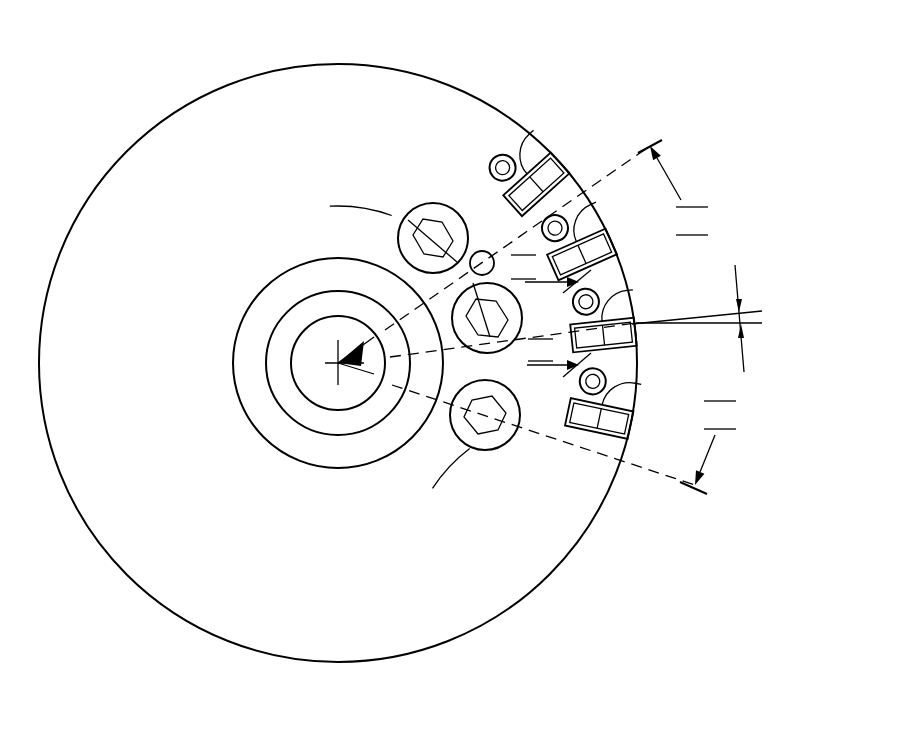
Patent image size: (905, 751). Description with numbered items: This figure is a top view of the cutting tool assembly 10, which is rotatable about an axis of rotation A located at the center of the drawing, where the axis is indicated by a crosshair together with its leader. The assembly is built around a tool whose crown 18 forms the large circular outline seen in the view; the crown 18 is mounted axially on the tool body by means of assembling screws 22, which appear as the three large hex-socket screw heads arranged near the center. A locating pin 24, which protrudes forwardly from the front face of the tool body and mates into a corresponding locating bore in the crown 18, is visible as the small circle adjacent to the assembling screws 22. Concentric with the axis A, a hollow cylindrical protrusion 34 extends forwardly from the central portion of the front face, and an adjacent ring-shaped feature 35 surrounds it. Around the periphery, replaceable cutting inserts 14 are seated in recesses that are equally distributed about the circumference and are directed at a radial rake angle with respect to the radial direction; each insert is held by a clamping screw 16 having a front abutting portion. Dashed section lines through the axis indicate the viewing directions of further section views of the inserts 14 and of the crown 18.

The cutting tool assembly 10 is at (656, 44).
The replaceable cutting inserts 14 is at (572, 150).
The clamping screws 16 is at (506, 152).
The crown 18 is at (180, 580).
The assembling screws 22 is at (492, 380).
The locating pin 24 is at (484, 250).
The hollow cylindrical protrusion 34 is at (230, 338).
The flange 35 is at (267, 282).
The axis of rotation A is at (338, 363).